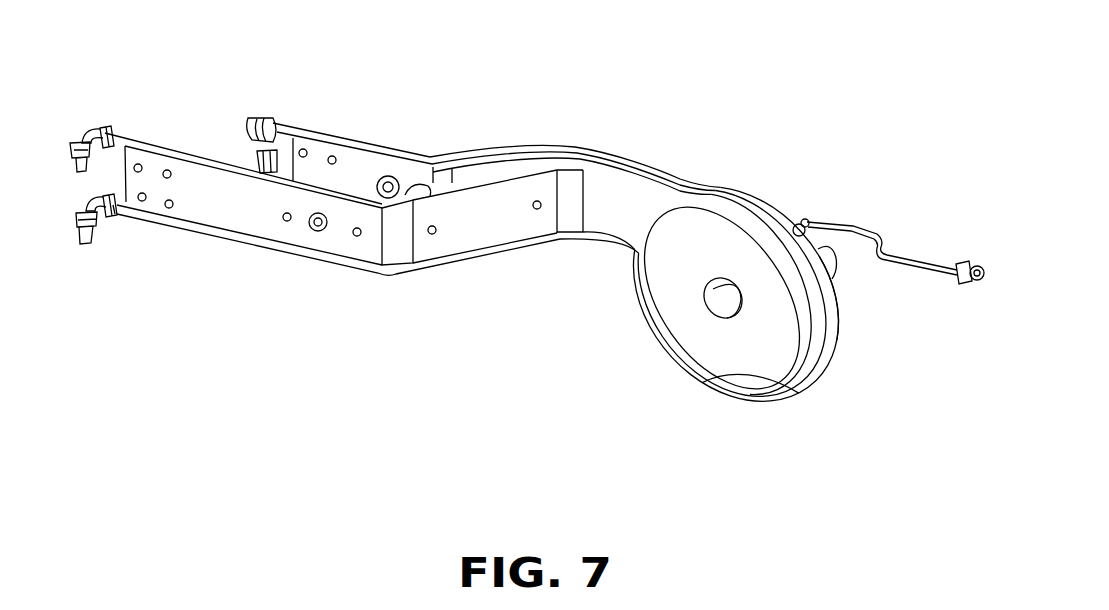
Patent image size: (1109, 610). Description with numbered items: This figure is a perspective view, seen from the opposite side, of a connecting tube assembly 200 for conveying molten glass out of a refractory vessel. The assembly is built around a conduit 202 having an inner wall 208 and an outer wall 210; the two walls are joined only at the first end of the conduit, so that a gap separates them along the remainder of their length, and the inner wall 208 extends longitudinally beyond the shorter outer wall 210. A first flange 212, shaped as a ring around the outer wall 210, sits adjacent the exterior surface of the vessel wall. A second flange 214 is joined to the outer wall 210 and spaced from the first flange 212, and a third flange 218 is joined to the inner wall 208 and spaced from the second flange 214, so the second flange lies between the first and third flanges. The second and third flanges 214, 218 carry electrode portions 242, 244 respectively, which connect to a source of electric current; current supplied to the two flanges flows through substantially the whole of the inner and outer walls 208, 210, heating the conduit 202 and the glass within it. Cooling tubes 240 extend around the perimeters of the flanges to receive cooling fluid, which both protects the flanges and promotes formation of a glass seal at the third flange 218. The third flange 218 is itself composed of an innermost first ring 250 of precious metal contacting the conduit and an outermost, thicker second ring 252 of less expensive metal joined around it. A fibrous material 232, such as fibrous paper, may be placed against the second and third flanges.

The connecting tube assembly 200 is at (592, 108).
The conduit 202 is at (832, 249).
The inner wall 208 is at (717, 313).
The outer wall 210 is at (838, 277).
The first flange 212 is at (790, 195).
The second flange 214 is at (740, 196).
The third flange 218 is at (697, 342).
The fibrous material 232 is at (855, 223).
The cooling tube 240 is at (157, 140).
The electrode portion 242 is at (349, 162).
The electrode portion 244 is at (487, 222).
The first ring 250 is at (773, 347).
The second ring 252 is at (759, 392).